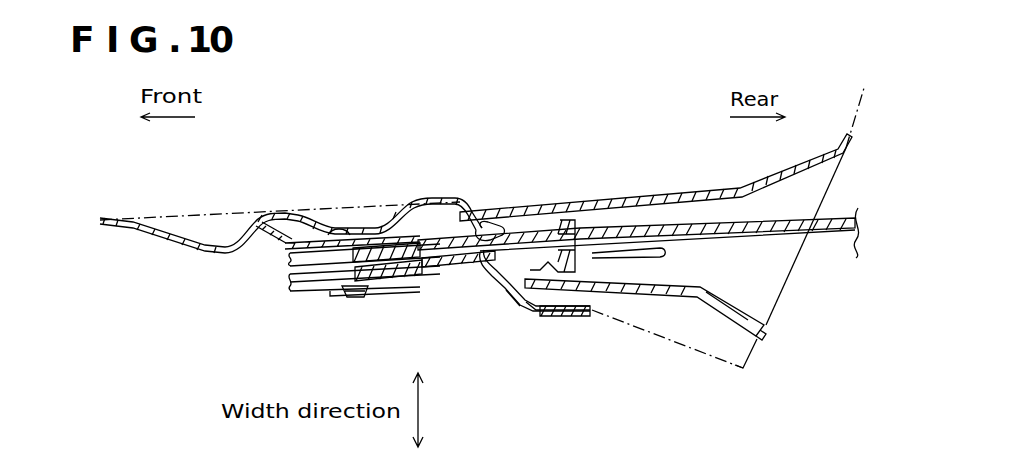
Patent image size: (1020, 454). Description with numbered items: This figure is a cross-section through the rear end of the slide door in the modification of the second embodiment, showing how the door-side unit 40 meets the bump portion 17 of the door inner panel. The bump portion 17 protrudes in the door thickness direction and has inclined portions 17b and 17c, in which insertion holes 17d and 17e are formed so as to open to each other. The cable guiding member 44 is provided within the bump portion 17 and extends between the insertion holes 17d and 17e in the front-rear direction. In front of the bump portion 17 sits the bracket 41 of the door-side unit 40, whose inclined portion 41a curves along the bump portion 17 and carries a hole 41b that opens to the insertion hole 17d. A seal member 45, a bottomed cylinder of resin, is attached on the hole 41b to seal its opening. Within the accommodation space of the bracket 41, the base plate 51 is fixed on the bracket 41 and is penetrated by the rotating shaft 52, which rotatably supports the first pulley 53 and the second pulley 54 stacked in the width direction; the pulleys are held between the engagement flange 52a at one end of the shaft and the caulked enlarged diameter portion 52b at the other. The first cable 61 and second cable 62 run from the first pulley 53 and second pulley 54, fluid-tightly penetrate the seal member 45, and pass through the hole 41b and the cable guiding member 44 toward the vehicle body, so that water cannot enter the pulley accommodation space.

The bump portion 17 is at (673, 340).
The inclined portion 17b is at (537, 313).
The inclined portion 17c is at (748, 360).
The insertion hole 17d is at (522, 303).
The insertion hole 17e is at (767, 335).
The door-side unit 40 is at (210, 323).
The bracket 41 is at (152, 238).
The inclined portion 41a is at (513, 283).
The hole 41b is at (494, 220).
The cable guiding member 44 is at (688, 192).
The seal member 45 is at (564, 222).
The base plate 51 is at (272, 222).
The rotating shaft 52 is at (365, 226).
The engagement flange 52a is at (340, 222).
The enlarged diameter portion 52b is at (355, 300).
The first pulley 53 is at (288, 284).
The second pulley 54 is at (287, 262).
The first cable 61 is at (455, 270).
The second cable 62 is at (474, 265).